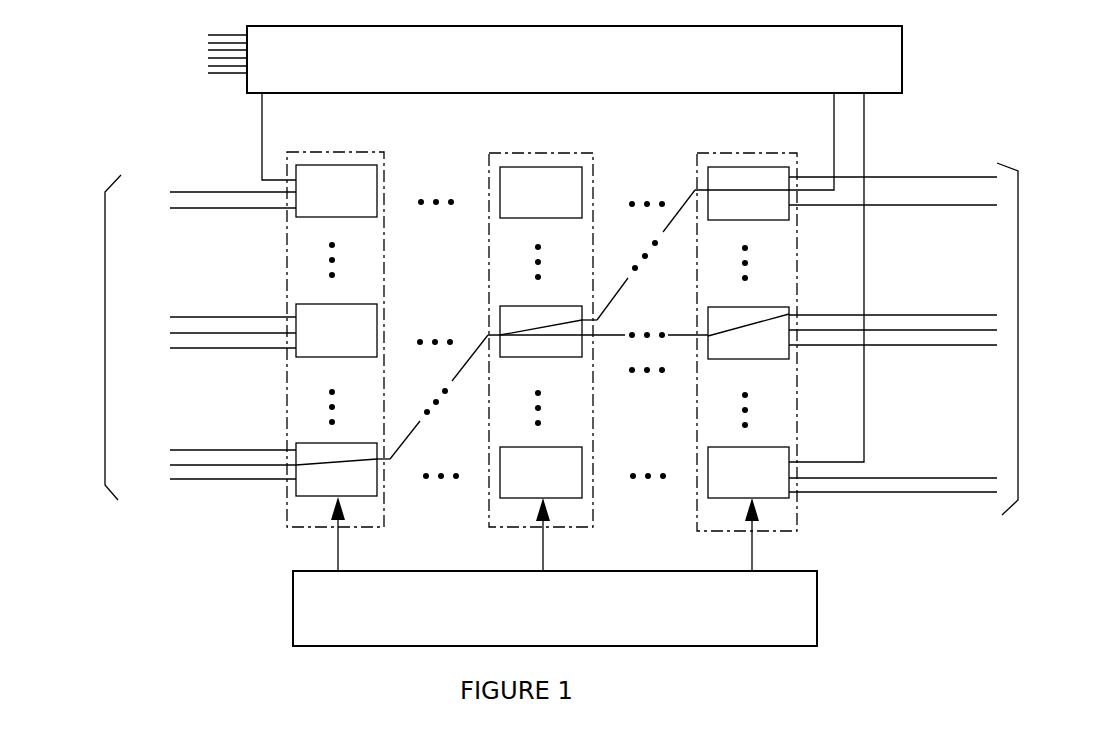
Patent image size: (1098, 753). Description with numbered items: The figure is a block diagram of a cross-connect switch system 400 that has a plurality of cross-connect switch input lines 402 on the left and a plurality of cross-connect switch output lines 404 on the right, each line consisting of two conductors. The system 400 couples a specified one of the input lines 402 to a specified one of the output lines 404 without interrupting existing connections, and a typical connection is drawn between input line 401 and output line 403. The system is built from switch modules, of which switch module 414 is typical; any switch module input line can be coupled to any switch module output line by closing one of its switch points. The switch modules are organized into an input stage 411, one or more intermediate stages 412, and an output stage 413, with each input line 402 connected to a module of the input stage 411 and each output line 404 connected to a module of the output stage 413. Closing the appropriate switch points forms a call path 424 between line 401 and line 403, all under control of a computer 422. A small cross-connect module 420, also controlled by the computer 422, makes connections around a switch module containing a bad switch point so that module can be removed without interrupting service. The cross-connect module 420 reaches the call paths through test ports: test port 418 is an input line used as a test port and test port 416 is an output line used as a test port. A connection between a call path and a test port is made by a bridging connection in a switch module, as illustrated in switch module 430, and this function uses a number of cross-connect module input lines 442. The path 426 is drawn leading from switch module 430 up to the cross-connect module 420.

The cross-connect switch system 400 is at (184, 597).
The input line 401 is at (155, 458).
The cross-connect switch input lines 402 is at (105, 338).
The output line 403 is at (924, 300).
The cross-connect switch output lines 404 is at (1018, 335).
The input stage 411 is at (374, 324).
The intermediate stage 412 is at (580, 326).
The output stage 413 is at (797, 525).
The switch module 414 is at (378, 306).
The test port 416 is at (882, 135).
The test port 418 is at (243, 133).
The cross-connect module 420 is at (735, 78).
The computer 422 is at (600, 621).
The call path 424 is at (650, 314).
The signal path to cross-connect module 426 is at (625, 261).
The switch module 430 is at (568, 348).
The cross-connect module input lines 442 is at (192, 55).